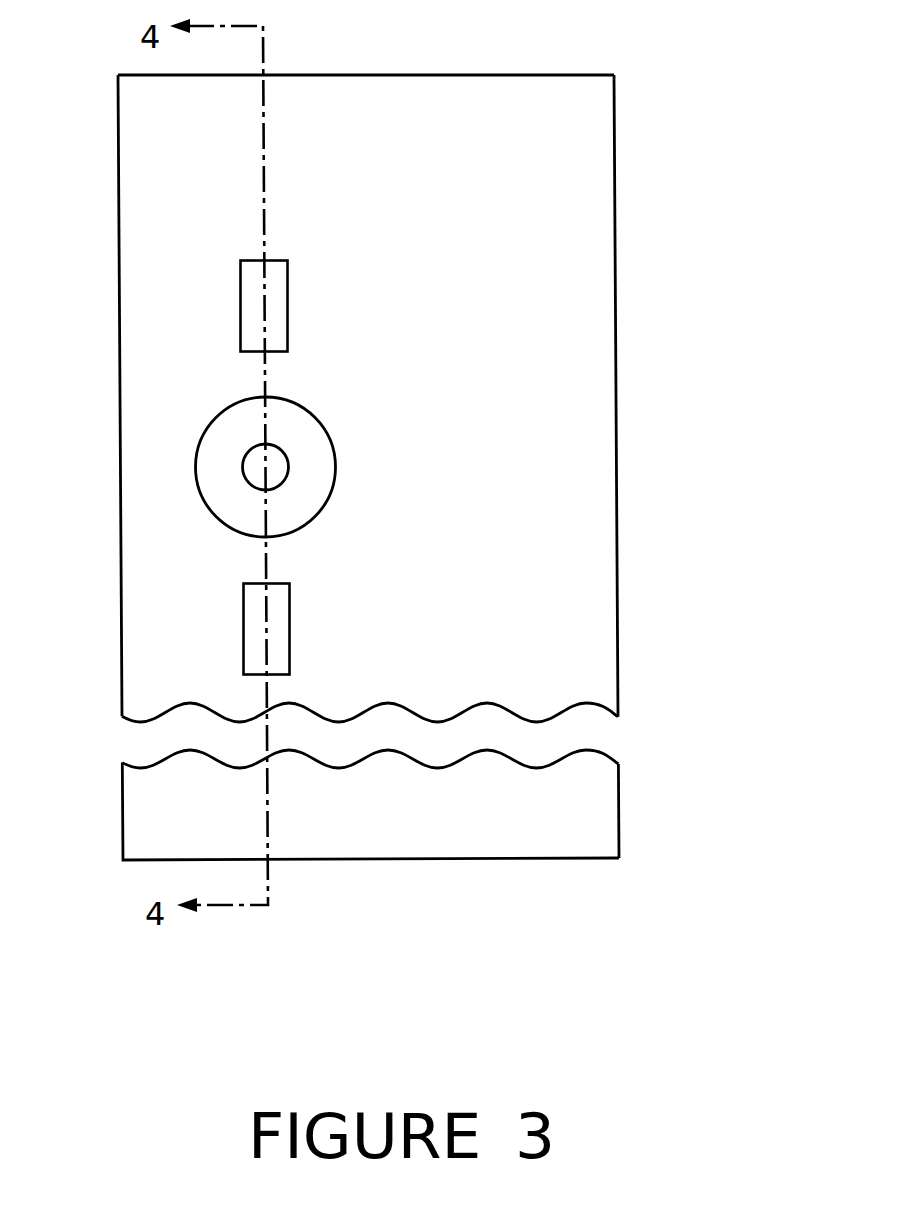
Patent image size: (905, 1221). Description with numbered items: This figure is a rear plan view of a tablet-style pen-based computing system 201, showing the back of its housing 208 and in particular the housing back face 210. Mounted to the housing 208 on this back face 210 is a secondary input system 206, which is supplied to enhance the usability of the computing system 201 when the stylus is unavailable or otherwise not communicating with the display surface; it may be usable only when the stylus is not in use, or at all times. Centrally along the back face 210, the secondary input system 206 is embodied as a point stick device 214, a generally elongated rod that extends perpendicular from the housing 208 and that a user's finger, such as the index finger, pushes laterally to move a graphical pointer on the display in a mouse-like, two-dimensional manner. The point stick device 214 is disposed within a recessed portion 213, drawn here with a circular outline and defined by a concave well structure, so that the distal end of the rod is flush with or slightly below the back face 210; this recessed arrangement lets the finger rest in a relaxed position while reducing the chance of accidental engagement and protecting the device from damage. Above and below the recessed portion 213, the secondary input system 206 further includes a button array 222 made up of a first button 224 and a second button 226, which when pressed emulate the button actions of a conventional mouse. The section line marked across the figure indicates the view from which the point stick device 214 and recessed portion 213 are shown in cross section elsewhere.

The pen-based computing system 201 is at (435, 433).
The secondary input system 206 is at (220, 419).
The housing 208 is at (616, 463).
The back face 210 is at (435, 433).
The recessed portion 213 is at (295, 466).
The point stick device 214 is at (277, 463).
The button array 222 is at (322, 259).
The first button 224 is at (277, 343).
The second button 226 is at (277, 667).